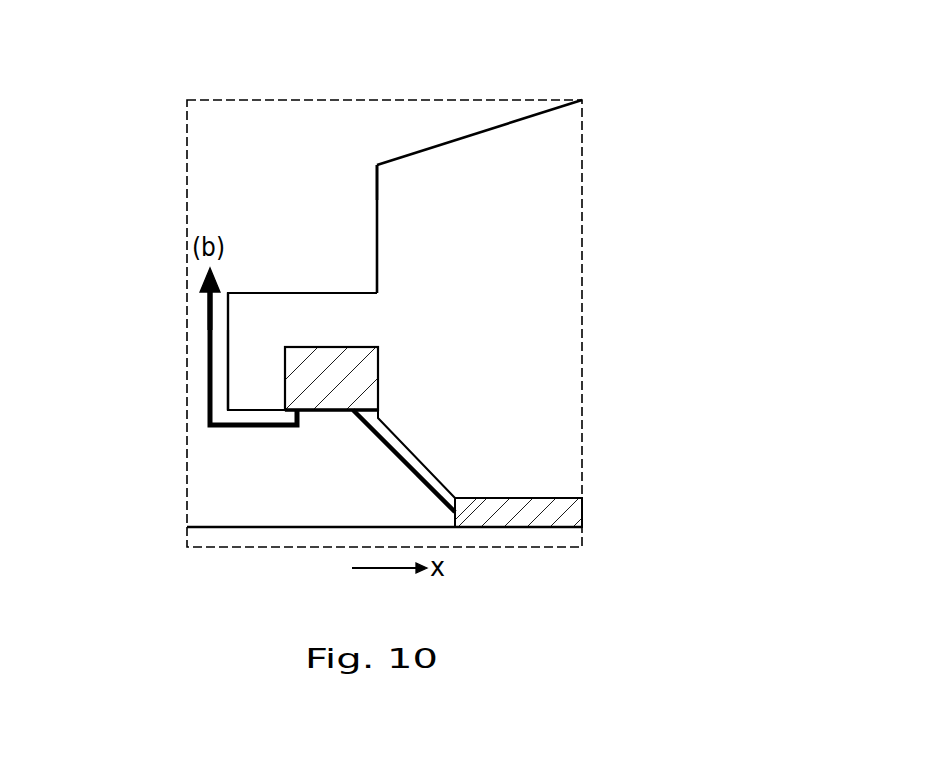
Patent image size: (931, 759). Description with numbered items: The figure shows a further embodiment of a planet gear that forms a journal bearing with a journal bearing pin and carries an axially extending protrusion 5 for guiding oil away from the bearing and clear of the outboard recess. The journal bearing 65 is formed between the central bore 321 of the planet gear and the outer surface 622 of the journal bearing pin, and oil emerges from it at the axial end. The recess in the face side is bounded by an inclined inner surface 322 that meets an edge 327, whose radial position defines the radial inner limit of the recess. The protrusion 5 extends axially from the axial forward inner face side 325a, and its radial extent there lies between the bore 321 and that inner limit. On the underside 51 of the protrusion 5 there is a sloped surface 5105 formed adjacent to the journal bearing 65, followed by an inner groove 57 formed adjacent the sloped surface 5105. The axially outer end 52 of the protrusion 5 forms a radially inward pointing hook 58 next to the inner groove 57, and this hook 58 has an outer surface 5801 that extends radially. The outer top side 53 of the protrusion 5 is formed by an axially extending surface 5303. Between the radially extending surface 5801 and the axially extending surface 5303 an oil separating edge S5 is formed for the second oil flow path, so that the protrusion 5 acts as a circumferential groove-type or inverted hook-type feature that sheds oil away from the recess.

The edge 327 is at (377, 165).
The inclined inner surface 322 is at (527, 116).
The axial forward inner face side 325a is at (377, 172).
The oil separating edge S5 is at (222, 292).
The protrusion 5 is at (273, 300).
The outer top side 53 is at (245, 292).
The axially extending surface 5303 is at (307, 293).
The axially outer end 52 is at (228, 313).
The radially inward pointing hook 58 is at (245, 340).
The outer surface 5801 is at (227, 368).
The inner groove 57 is at (322, 383).
The underside 51 is at (403, 448).
The sloped surface 5105 is at (438, 482).
The journal bearing 65 is at (572, 512).
The central bore 321 is at (533, 498).
The outer surface 622 is at (252, 527).